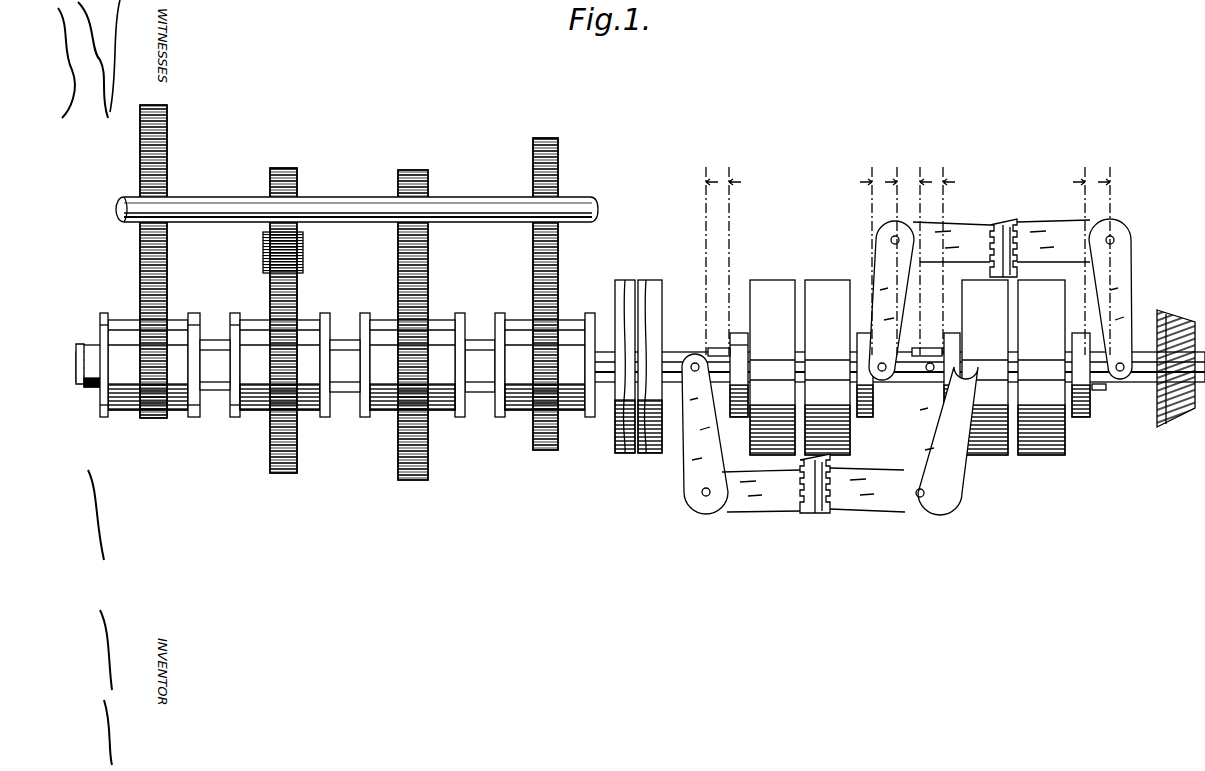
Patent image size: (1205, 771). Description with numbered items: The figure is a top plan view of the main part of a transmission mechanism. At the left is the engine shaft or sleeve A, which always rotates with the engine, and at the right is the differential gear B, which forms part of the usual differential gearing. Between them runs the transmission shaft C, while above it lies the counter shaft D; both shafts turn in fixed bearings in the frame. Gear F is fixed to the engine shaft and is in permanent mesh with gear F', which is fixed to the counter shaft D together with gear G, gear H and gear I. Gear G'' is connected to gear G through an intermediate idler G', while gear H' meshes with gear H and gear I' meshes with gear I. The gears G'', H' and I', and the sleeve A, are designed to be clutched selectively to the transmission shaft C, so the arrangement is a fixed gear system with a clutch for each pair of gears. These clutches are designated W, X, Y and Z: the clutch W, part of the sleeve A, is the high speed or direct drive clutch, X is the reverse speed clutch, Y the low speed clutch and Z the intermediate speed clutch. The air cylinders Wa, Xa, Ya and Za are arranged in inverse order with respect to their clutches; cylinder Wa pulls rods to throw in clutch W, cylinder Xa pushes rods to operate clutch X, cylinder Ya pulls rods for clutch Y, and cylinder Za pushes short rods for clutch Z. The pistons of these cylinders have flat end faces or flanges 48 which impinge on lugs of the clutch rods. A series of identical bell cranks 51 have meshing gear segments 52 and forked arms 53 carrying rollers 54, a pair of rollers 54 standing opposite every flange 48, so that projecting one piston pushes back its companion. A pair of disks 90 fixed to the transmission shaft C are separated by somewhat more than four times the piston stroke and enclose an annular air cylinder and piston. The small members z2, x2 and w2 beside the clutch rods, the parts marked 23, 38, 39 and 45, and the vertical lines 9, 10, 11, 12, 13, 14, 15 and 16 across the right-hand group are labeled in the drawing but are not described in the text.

The engine shaft or sleeve A is at (86, 390).
The differential gear B is at (1168, 314).
The transmission shaft C is at (84, 352).
The counter shaft D is at (352, 198).
The gear F is at (149, 282).
The gear F' is at (168, 261).
The gear G is at (296, 320).
The intermediate idler G' is at (301, 252).
The gear G'' is at (305, 320).
The gear H is at (426, 323).
The gear H' is at (430, 325).
The gear I is at (556, 294).
The gear I' is at (558, 294).
The high speed or direct drive clutch W is at (178, 410).
The reverse speed clutch X is at (306, 402).
The low speed clutch Y is at (440, 404).
The intermediate speed clutch Z is at (568, 410).
The air cylinder Wa is at (1041, 367).
The air cylinder Xa is at (985, 367).
The air cylinder Ya is at (827, 367).
The air cylinder Za is at (772, 367).
The coupling sleeve 23 is at (224, 393).
The flange 38 is at (330, 404).
The flange 39 is at (248, 335).
The gear ring 45 is at (810, 284).
The piston flange 48 is at (740, 405).
The bell crank 51 is at (757, 506).
The gear segment 52 is at (812, 514).
The forked arm 53 is at (688, 470).
The roller 54 is at (694, 356).
The disk 90 is at (650, 288).
The section line 9 is at (709, 252).
The section line 10 is at (731, 252).
The section line 11 is at (871, 252).
The section line 12 is at (896, 252).
The section line 13 is at (922, 252).
The section line 14 is at (945, 252).
The section line 15 is at (1084, 252).
The section line 16 is at (1109, 252).
The clutch member z2 is at (719, 342).
The clutch member x2 is at (930, 347).
The clutch member w2 is at (1099, 394).